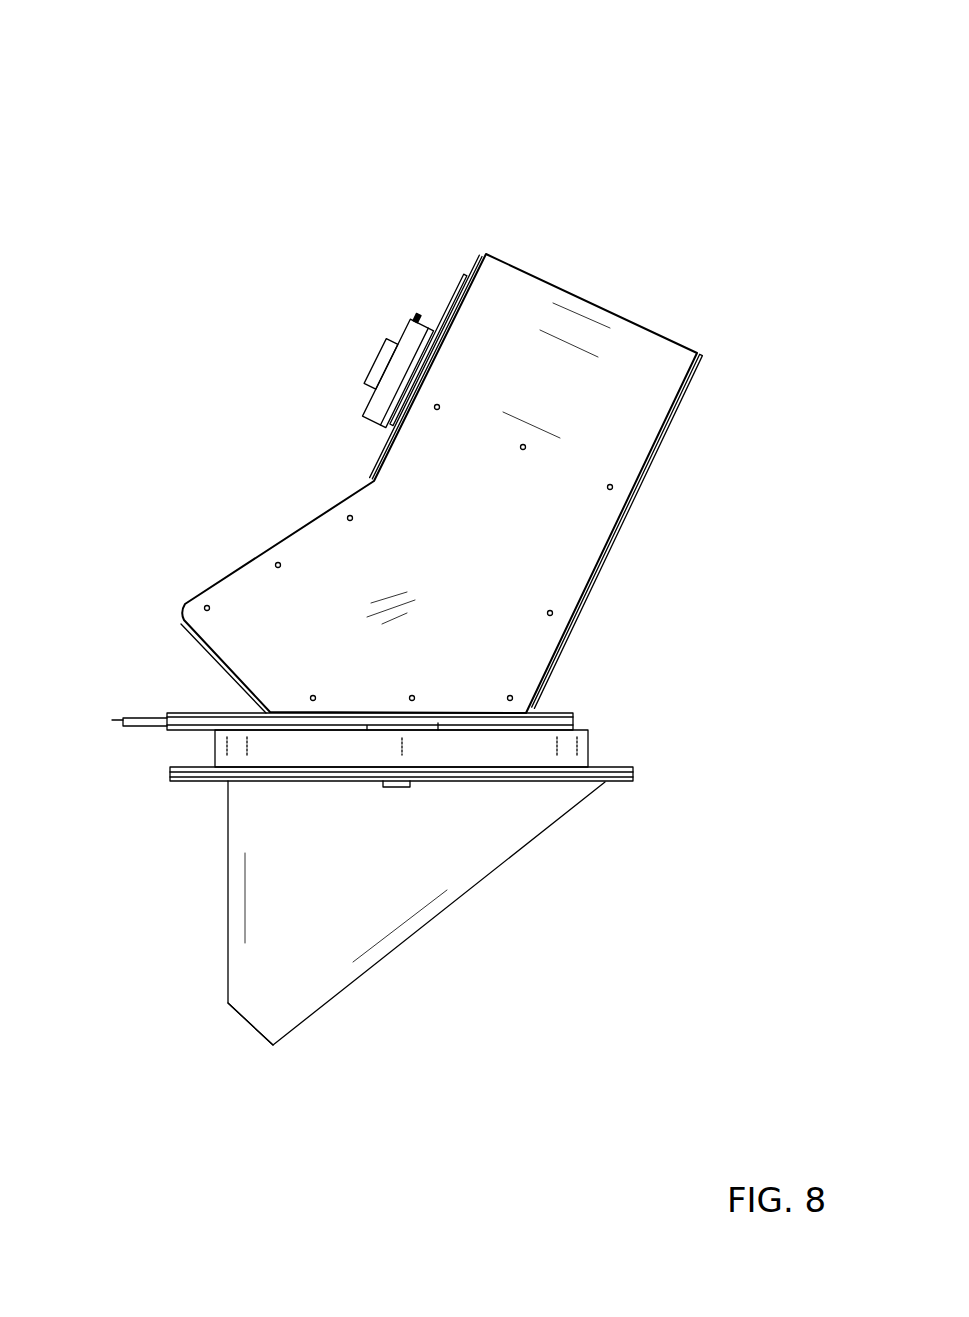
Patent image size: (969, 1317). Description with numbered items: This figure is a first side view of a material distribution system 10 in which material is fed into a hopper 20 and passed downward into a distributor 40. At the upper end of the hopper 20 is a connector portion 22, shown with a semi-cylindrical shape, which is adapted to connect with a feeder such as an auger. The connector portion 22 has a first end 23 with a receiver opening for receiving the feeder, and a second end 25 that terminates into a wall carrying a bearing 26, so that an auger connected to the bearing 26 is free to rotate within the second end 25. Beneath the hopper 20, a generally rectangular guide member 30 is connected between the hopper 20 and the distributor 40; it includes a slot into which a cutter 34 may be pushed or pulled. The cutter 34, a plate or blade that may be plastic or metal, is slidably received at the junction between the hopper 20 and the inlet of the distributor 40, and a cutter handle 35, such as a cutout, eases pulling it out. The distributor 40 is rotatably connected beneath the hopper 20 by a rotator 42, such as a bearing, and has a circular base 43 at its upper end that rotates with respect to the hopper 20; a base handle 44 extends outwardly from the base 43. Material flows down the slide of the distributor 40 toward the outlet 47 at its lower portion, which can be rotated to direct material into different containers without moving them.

The solar panel mounting assembly 10 is at (178, 135).
The hopper 20 is at (577, 295).
The connector portion 22 is at (453, 293).
The first end 23 is at (642, 477).
The second end 25 is at (375, 462).
The bearing 26 is at (383, 353).
The guide member 30 is at (563, 708).
The cutter 34 is at (150, 717).
The cutter handle 35 is at (118, 720).
The distributor 40 is at (383, 960).
The rotator 42 is at (590, 745).
The base 43 is at (182, 782).
The base handle 44 is at (400, 788).
The outlet 47 is at (253, 1028).